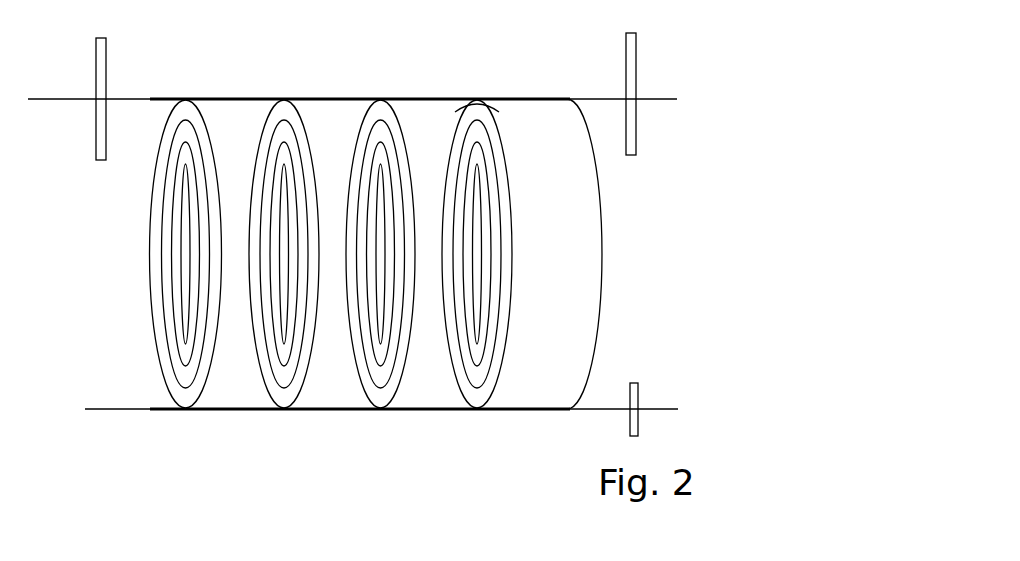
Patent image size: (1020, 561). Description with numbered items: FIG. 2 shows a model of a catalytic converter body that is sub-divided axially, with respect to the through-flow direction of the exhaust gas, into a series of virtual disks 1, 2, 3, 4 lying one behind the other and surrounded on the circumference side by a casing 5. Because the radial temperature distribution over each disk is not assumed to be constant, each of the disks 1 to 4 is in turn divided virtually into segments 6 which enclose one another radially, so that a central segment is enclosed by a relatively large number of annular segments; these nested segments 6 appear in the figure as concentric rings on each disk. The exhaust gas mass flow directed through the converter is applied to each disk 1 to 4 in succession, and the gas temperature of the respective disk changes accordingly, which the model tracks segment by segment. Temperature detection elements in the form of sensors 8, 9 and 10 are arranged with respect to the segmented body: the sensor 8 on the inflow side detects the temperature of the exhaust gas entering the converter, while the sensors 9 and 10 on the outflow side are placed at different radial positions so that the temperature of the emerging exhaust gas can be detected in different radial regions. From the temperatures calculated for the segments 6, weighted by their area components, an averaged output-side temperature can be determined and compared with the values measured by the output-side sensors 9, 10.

The disk 1 is at (226, 142).
The disk 2 is at (323, 142).
The disk 3 is at (416, 141).
The disk 4 is at (526, 141).
The casing 5 is at (237, 98).
The virtual segments 6 is at (472, 100).
The sensor 8 is at (96, 132).
The sensor 9 is at (636, 128).
The sensor 10 is at (638, 392).